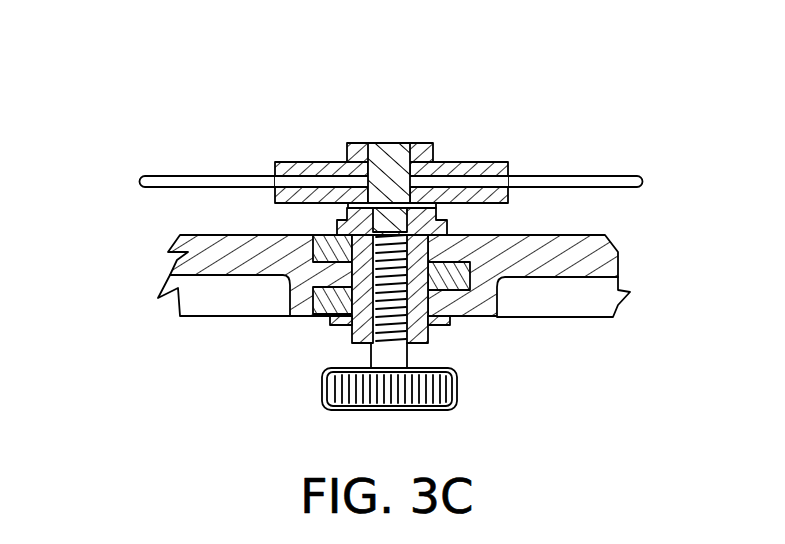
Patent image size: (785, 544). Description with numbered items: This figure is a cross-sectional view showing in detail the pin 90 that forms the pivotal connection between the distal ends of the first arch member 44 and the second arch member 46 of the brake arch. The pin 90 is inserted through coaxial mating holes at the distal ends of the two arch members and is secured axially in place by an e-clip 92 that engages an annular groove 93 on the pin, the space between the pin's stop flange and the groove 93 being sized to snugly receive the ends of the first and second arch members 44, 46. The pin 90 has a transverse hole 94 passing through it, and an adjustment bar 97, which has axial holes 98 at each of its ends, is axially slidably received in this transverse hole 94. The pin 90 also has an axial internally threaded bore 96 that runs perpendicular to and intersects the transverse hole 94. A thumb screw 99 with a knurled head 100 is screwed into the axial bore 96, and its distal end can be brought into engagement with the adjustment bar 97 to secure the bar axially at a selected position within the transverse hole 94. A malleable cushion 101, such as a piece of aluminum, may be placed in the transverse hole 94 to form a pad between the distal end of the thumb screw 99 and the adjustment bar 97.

The first arch member 44 is at (183, 239).
The second arch member 46 is at (587, 255).
The pin 90 is at (397, 122).
The e-clip 92 is at (335, 322).
The annular groove 93 is at (455, 322).
The transverse hole 94 is at (443, 208).
The axial internally threaded bore 96 is at (357, 343).
The adjustment bar 97 is at (433, 148).
The axial holes 98 is at (292, 180).
The thumb screw 99 is at (398, 354).
The knurled head 100 is at (450, 390).
The malleable cushion 101 is at (347, 205).